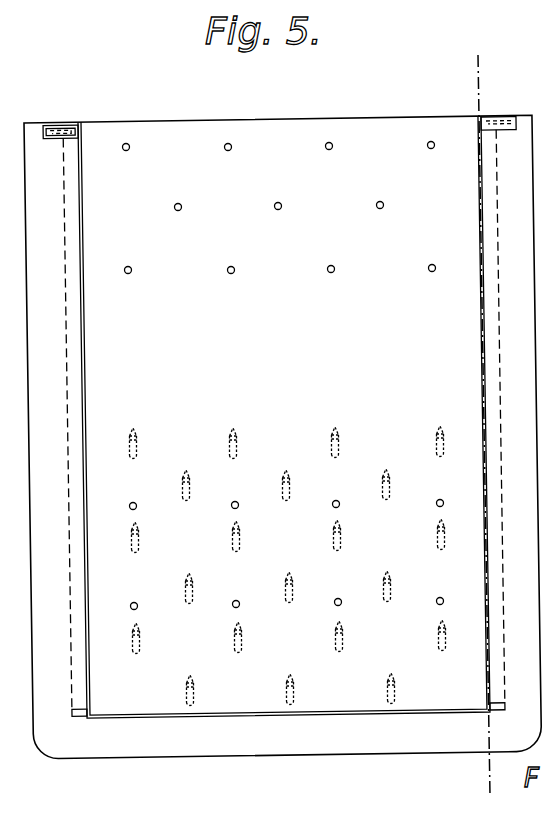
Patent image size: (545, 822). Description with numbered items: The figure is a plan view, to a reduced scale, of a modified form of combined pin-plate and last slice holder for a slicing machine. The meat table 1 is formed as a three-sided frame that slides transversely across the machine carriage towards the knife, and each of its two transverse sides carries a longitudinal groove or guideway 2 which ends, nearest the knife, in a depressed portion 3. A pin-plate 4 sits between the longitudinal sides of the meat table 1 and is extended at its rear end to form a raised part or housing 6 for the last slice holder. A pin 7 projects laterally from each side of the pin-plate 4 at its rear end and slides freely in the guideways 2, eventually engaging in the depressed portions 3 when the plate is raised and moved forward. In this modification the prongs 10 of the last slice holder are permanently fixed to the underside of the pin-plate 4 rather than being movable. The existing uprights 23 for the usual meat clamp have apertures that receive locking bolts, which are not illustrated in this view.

The meat table 1 is at (269, 745).
The longitudinal groove or guideway 2 is at (512, 118).
The depressed portion 3 is at (75, 121).
The pin-plate 4 is at (284, 417).
The raised part or housing 6 is at (483, 423).
The pin 7 is at (83, 720).
The prong 10 is at (322, 456).
The upright 23 is at (50, 128).